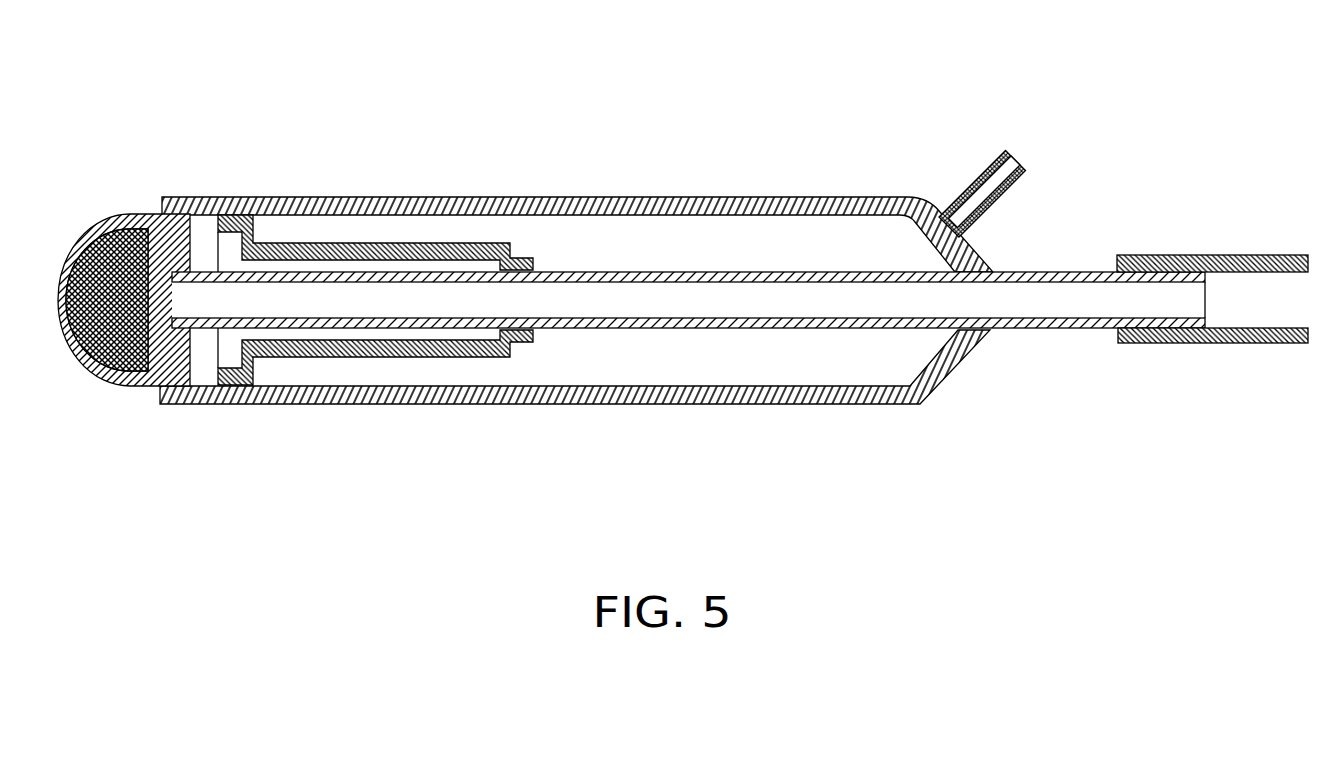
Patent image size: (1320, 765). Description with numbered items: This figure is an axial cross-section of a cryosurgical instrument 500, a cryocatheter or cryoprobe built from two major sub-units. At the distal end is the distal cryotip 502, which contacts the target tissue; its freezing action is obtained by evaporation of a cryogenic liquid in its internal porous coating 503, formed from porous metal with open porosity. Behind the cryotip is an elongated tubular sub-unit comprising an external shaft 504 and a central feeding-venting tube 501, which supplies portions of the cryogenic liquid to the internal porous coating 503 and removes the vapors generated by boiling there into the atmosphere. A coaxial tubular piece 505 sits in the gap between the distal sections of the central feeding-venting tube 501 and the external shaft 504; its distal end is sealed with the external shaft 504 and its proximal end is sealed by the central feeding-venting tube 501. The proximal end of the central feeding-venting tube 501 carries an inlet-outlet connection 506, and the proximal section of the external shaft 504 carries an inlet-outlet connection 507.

The cryosurgical instrument 500 is at (683, 302).
The central feeding-venting tube 501 is at (612, 270).
The distal cryotip 502 is at (90, 230).
The internal porous coating 503 is at (84, 365).
The external shaft 504 is at (312, 407).
The coaxial tubular piece 505 is at (333, 252).
The inlet-outlet connection 506 is at (1247, 345).
The inlet-outlet connection 507 is at (963, 187).